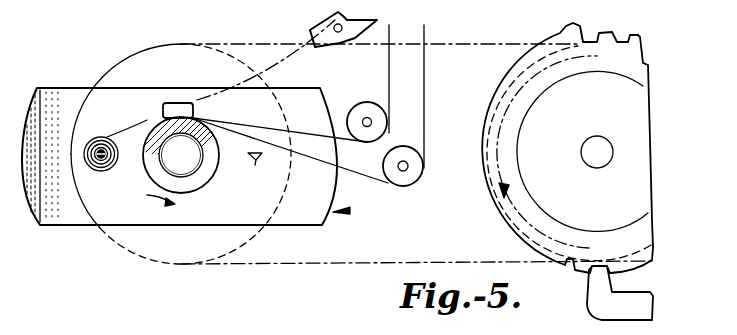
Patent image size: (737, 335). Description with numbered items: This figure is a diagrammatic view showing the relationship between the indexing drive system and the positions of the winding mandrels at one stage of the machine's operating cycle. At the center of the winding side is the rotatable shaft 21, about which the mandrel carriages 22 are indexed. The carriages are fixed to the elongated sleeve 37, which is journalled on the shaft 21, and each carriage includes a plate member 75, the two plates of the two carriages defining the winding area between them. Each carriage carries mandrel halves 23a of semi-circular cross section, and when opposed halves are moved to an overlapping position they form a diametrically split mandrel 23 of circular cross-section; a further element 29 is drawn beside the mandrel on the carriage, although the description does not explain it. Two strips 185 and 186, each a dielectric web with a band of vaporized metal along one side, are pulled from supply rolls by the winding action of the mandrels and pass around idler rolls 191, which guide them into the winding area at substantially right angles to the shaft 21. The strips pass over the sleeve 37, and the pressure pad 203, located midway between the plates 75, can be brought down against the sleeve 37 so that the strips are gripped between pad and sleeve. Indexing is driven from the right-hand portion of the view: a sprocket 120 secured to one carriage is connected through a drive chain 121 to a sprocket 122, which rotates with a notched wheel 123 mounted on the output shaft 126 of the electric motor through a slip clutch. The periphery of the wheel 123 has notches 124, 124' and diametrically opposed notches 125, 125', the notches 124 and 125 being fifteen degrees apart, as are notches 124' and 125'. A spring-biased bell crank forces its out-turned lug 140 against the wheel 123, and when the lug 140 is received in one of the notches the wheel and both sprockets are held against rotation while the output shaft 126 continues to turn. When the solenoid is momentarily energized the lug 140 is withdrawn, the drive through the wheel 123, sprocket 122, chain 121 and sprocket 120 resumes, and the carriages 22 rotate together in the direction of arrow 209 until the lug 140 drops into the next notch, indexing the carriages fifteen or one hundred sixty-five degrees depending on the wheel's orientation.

The rotatable shaft 21 is at (188, 166).
The mandrel carriage 22 is at (356, 217).
The split mandrel 23 is at (100, 172).
The mandrel half 23a is at (255, 165).
The lever 29 is at (99, 138).
The elongated sleeve 37 is at (186, 193).
The plate member 75 is at (70, 225).
The sprocket 120 is at (120, 62).
The drive chain 121 is at (492, 45).
The sprocket 122 is at (498, 203).
The notched wheel 123 is at (502, 230).
The notch 124 is at (631, 255).
The notch 124' is at (560, 52).
The notch 125 is at (557, 246).
The notch 125' is at (608, 73).
The output shaft 126 is at (597, 168).
The out-turned lug 140 is at (588, 295).
The strip 185 is at (343, 143).
The strip 186 is at (373, 182).
The idler roll 191 is at (382, 118).
The pressure pad 203 is at (182, 103).
The arrow 209 is at (154, 212).